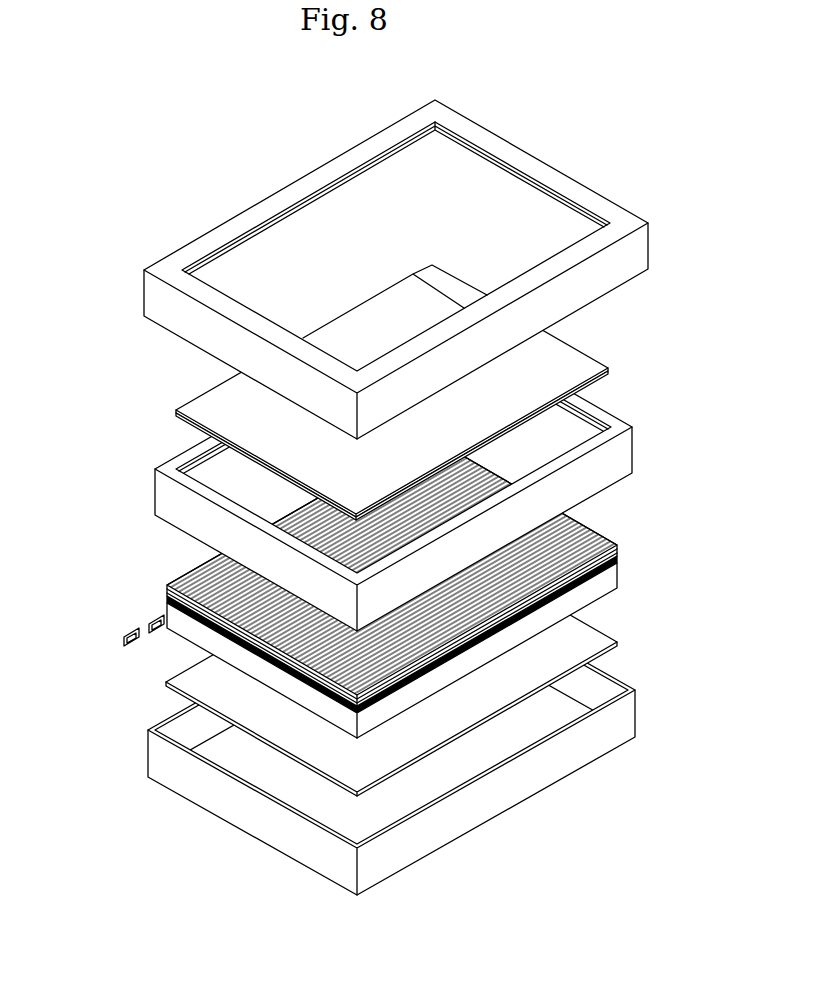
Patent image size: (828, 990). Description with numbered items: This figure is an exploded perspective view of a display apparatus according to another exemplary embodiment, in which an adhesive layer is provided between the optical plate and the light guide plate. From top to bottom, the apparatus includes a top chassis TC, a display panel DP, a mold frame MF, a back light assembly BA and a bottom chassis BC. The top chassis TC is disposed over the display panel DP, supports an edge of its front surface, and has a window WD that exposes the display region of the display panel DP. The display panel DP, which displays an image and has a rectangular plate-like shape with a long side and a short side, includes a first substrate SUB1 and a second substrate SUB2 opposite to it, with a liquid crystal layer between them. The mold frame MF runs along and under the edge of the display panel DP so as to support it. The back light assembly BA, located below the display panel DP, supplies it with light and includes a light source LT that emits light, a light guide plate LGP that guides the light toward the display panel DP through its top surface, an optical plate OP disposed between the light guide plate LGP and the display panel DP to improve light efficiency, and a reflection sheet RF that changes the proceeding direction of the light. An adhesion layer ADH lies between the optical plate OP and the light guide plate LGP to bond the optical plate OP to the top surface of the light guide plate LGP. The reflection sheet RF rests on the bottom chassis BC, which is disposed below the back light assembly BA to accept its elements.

The top chassis TC is at (389, 269).
The window WD is at (373, 203).
The display panel DP is at (424, 392).
The first substrate SUB1 is at (575, 358).
The second substrate SUB2 is at (538, 358).
The mold frame MF is at (163, 497).
The back light assembly BA is at (329, 615).
The optical plate OP is at (176, 579).
The adhesion layer ADH is at (167, 598).
The light guide plate LGP is at (167, 611).
The light source LT is at (121, 632).
The reflection sheet RF is at (195, 687).
The bottom chassis BC is at (140, 748).